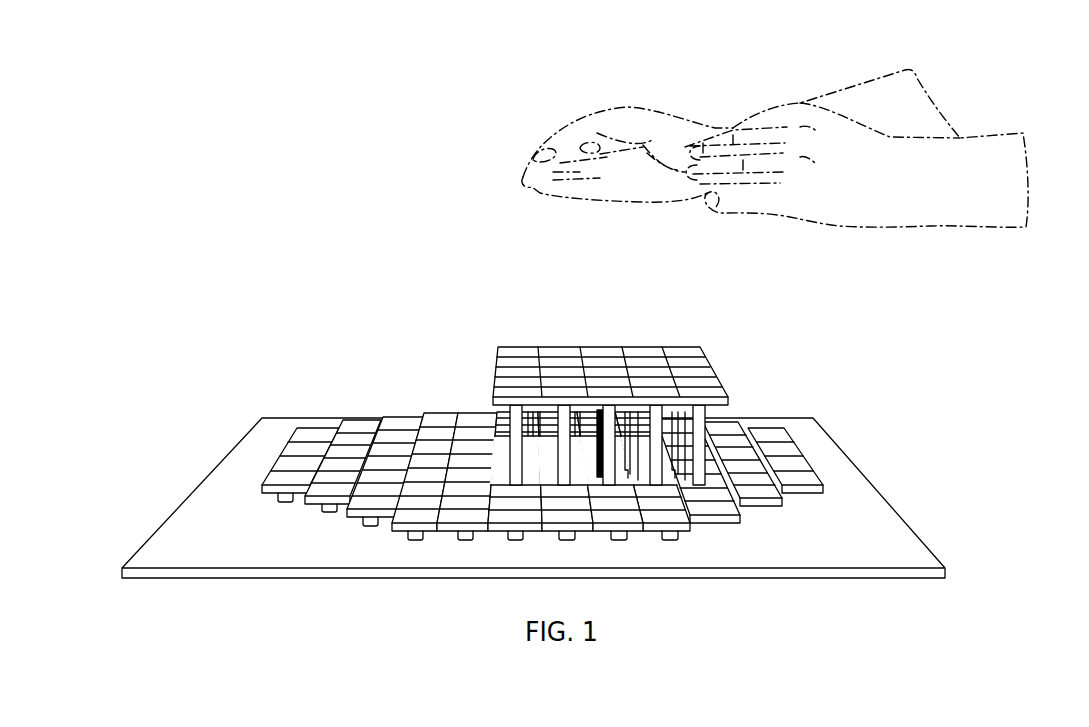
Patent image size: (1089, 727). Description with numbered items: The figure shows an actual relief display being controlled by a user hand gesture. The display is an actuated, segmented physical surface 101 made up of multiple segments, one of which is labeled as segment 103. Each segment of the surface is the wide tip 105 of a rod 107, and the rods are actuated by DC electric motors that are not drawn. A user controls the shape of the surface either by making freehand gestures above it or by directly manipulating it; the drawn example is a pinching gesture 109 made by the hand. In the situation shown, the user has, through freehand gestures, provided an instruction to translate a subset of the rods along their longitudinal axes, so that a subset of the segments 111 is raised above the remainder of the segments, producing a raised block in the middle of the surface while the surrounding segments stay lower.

The physical surface 101 is at (367, 404).
The segment 103 is at (303, 466).
The wide tip 105 is at (497, 344).
The rod 107 is at (702, 415).
The pinching gesture 109 is at (572, 86).
The subset of the segments 111 is at (644, 384).